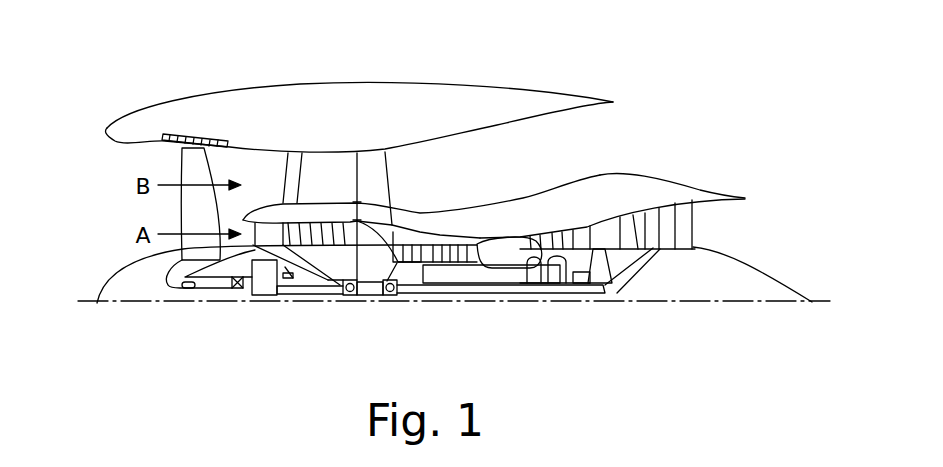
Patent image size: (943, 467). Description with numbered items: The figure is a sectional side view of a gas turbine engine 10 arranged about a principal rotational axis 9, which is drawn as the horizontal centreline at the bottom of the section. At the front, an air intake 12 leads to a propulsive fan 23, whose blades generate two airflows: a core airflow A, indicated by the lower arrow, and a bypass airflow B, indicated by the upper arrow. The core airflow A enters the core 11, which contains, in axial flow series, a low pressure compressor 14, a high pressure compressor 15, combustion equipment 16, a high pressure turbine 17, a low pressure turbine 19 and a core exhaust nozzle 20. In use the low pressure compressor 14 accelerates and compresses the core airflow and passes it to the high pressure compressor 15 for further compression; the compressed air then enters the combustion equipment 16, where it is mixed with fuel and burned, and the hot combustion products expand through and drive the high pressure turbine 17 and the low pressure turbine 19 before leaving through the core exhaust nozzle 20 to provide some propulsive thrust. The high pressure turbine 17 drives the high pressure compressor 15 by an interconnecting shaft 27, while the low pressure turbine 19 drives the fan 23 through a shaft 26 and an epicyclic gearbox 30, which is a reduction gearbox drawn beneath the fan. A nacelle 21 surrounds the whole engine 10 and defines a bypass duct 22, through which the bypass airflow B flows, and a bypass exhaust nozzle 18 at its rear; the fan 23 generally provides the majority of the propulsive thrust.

The principal rotational axis 9 is at (717, 304).
The gas turbine engine 10 is at (160, 103).
The core 11 is at (516, 224).
The air intake 12 is at (119, 161).
The low pressure compressor 14 is at (322, 231).
The high pressure compressor 15 is at (448, 232).
The combustion equipment 16 is at (502, 256).
The high-pressure turbine 17 is at (560, 231).
The bypass exhaust nozzle 18 is at (698, 99).
The low pressure turbine 19 is at (672, 238).
The core exhaust nozzle 20 is at (746, 233).
The nacelle 21 is at (372, 96).
The bypass duct 22 is at (566, 137).
The propulsive fan 23 is at (187, 218).
The shaft 26 is at (413, 293).
The interconnecting shaft 27 is at (467, 283).
The epicyclic gearbox 30 is at (265, 294).